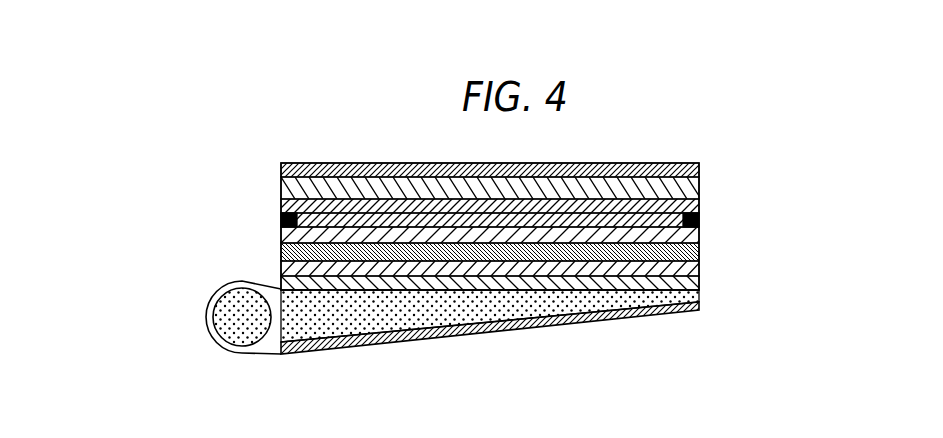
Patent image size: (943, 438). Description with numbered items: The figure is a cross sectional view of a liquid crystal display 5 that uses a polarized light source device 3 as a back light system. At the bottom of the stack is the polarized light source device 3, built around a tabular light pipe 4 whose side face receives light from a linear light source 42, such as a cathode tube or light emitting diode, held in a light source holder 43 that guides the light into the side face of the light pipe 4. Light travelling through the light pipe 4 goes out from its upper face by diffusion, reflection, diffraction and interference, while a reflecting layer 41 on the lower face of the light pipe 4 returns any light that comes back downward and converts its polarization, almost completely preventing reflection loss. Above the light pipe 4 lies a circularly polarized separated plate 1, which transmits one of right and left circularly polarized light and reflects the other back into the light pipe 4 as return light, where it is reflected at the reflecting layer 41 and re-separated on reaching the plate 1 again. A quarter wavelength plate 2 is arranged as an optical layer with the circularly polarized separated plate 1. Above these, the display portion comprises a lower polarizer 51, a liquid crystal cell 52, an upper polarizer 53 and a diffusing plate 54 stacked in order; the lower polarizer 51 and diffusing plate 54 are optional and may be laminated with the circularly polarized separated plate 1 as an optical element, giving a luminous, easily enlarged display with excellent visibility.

The circularly polarized separated plate 1 is at (700, 284).
The ¼ wavelength plate 2 is at (700, 271).
The polarized light source device 3 is at (501, 337).
The light pipe 4 is at (400, 322).
The reflecting layer 41 is at (543, 325).
The light source 42 is at (242, 330).
The light source holder 43 is at (210, 302).
The liquid crystal display 5 is at (578, 231).
The lower polarizer 51 is at (700, 255).
The liquid crystal cell 52 is at (700, 207).
The upper polarizer 53 is at (700, 188).
The diffusing plate 54 is at (700, 169).